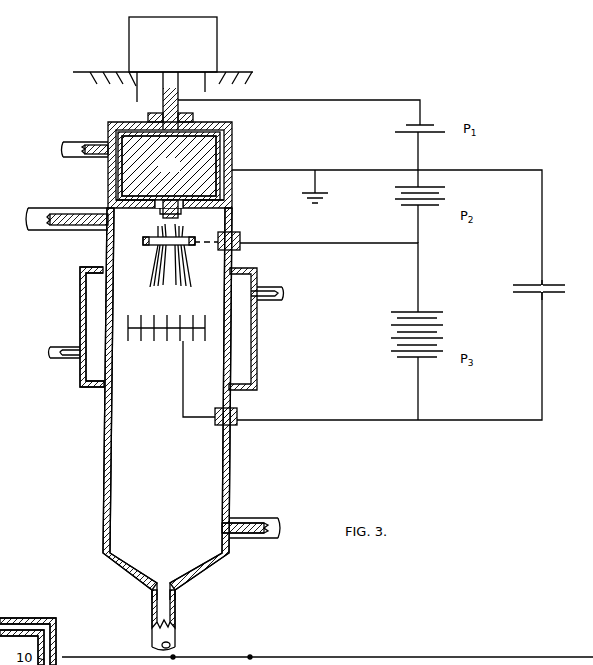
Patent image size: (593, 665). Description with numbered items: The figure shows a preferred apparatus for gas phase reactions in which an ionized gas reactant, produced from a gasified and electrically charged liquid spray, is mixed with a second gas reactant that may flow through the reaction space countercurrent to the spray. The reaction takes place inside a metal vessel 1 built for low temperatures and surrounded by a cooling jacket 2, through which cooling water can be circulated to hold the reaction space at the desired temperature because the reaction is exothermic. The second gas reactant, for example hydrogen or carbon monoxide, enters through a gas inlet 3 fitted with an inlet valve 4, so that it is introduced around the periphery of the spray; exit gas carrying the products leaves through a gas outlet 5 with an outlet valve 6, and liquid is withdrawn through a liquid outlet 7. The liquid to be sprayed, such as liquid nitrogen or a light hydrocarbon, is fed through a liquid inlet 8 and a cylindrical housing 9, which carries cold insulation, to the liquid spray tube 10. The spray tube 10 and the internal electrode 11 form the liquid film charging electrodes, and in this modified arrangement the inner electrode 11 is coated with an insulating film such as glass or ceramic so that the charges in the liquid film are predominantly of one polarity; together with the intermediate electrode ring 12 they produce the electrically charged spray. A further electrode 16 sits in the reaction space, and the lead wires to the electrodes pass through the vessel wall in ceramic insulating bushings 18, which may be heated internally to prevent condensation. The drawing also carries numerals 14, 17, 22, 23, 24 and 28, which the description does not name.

The vessel 1 is at (104, 488).
The cooling jacket 2 is at (80, 300).
The gas inlet 3 is at (262, 497).
The inlet valve 4 is at (226, 526).
The gas outlet 5 is at (52, 236).
The outlet valve 6 is at (88, 208).
The liquid outlet 7 is at (178, 608).
The liquid nitrogen inlet 8 is at (82, 142).
The cylindrical housing 9 is at (236, 188).
The liquid spray tube 10 is at (182, 212).
The internal electrode 11 is at (169, 166).
The intermediate electrode ring 12 is at (142, 250).
The nut 14 is at (148, 113).
The electrode 16 is at (136, 334).
The capacitor 17 is at (551, 296).
The insulating bushings 18 is at (240, 236).
The insulating liner 22 is at (224, 136).
The support block 23 is at (173, 44).
The nut 24 is at (193, 110).
The spray 28 is at (190, 272).